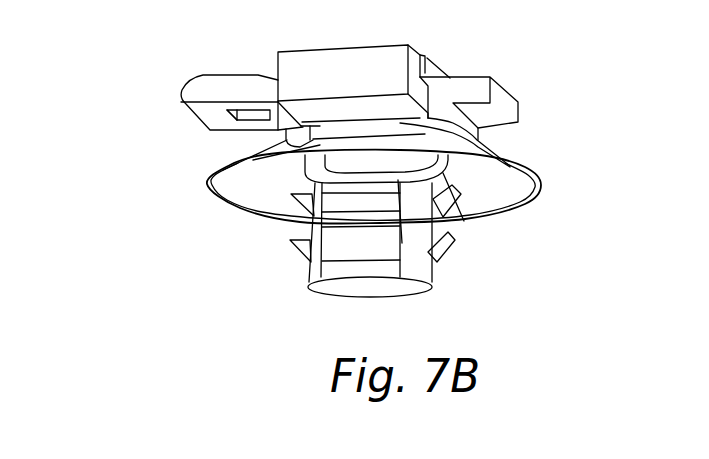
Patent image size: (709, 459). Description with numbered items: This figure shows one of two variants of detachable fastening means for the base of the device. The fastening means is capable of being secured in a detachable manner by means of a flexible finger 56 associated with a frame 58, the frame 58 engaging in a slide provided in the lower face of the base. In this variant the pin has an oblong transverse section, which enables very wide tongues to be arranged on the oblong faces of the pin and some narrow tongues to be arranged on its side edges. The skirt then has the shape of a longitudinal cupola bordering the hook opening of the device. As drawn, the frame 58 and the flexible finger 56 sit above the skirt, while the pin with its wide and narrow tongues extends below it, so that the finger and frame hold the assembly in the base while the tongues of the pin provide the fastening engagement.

The frame 58 is at (347, 62).
The flexible finger 56 is at (208, 91).